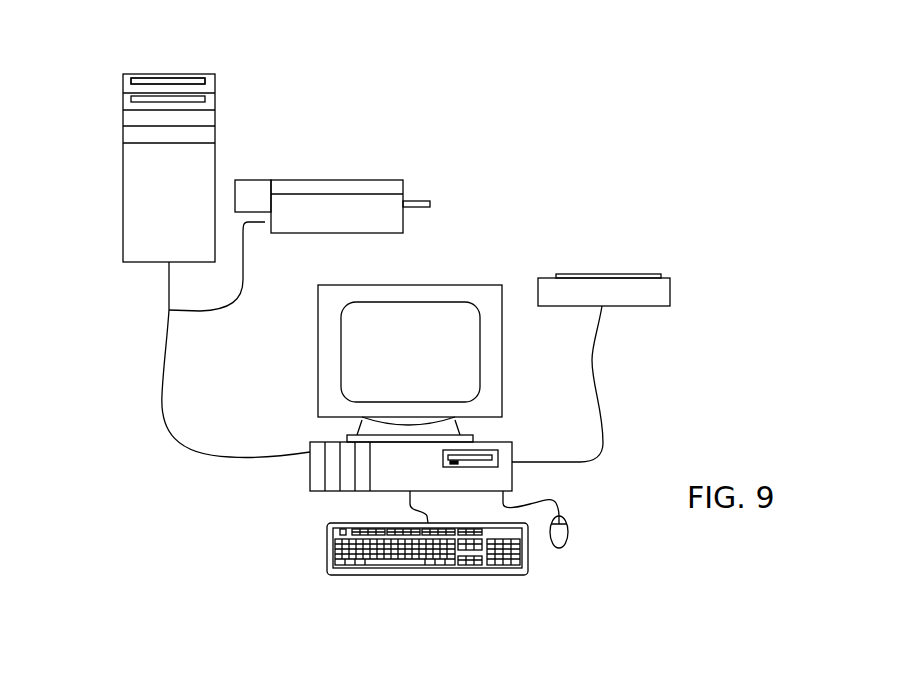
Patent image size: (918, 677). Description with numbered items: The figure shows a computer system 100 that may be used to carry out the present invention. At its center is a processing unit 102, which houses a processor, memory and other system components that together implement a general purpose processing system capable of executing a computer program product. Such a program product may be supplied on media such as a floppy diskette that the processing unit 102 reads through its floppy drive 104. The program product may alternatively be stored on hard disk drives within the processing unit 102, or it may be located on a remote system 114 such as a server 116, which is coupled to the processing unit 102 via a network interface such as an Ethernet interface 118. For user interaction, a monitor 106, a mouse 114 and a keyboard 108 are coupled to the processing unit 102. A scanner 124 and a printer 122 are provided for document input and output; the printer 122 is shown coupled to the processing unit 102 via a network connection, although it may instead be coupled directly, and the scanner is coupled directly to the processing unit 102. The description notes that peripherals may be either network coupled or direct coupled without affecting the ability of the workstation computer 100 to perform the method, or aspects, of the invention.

The computer system 100 is at (514, 151).
The processing unit 102 is at (310, 481).
The floppy drive 104 is at (498, 456).
The monitor 106 is at (467, 285).
The keyboard 108 is at (327, 548).
The remote system / mouse 114 is at (215, 160).
The server 116 is at (215, 81).
The Ethernet interface 118 is at (163, 348).
The printer 122 is at (369, 180).
The scanner 124 is at (625, 274).